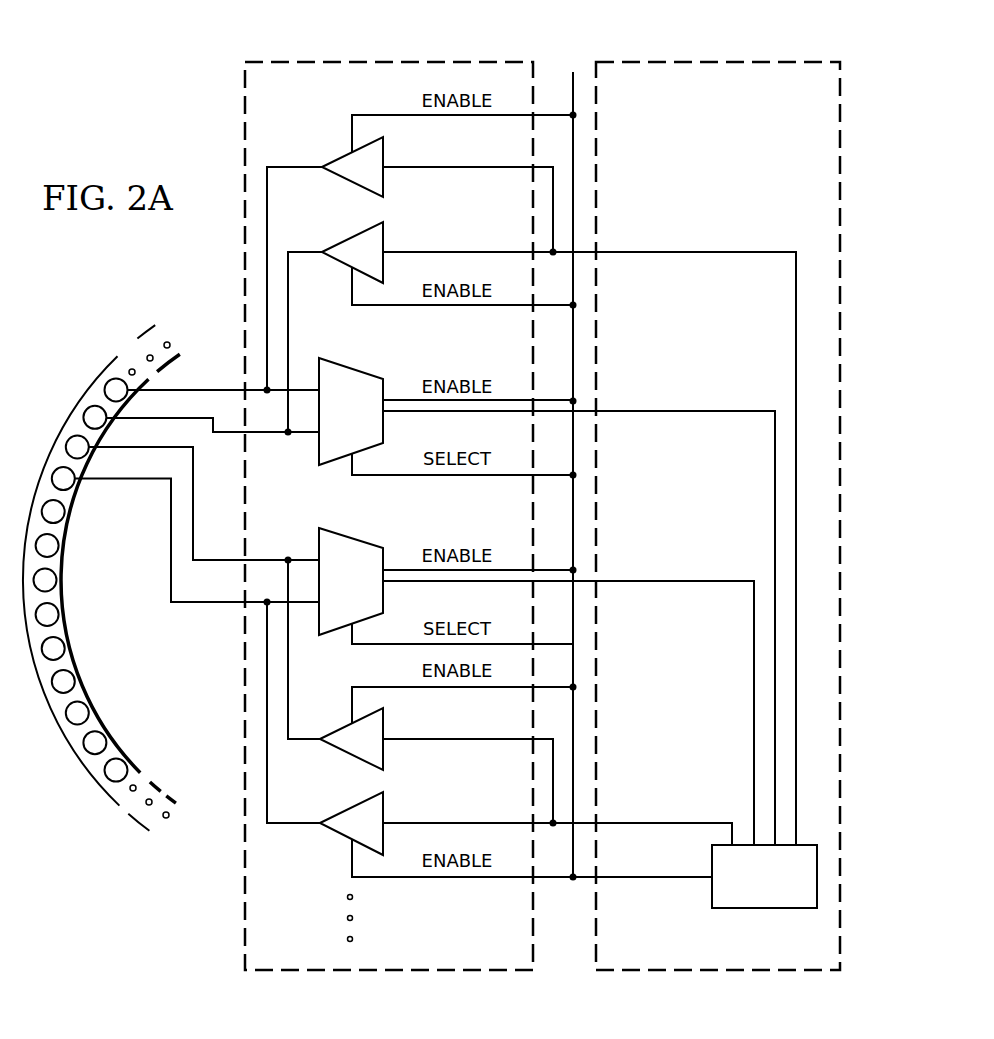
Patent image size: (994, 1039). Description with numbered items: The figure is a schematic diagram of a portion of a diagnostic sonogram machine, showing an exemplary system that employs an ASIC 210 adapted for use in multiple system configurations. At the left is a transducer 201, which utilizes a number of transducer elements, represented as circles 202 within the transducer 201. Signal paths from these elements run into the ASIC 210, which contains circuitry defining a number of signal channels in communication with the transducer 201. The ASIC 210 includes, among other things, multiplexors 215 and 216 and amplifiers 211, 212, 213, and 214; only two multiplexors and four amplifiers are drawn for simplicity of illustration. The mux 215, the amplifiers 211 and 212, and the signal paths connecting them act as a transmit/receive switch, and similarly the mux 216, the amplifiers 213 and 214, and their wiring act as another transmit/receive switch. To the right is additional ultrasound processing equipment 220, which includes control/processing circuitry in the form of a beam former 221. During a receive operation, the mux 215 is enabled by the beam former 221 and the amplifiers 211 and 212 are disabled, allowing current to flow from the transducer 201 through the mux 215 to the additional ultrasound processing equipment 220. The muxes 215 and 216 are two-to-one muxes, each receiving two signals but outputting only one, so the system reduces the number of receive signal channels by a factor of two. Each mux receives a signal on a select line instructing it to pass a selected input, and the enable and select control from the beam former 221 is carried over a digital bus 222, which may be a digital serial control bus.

The transducer 201 is at (53, 454).
The circles 202 is at (96, 733).
The ASIC 210 is at (461, 933).
The amplifier 211 is at (341, 157).
The amplifier 212 is at (341, 241).
The amplifier 213 is at (341, 751).
The amplifier 214 is at (341, 836).
The multiplexor 215 is at (358, 371).
The multiplexor 216 is at (358, 541).
The additional ultrasound processing equipment 220 is at (738, 165).
The beam former 221 is at (763, 909).
The digital bus 222 is at (574, 88).